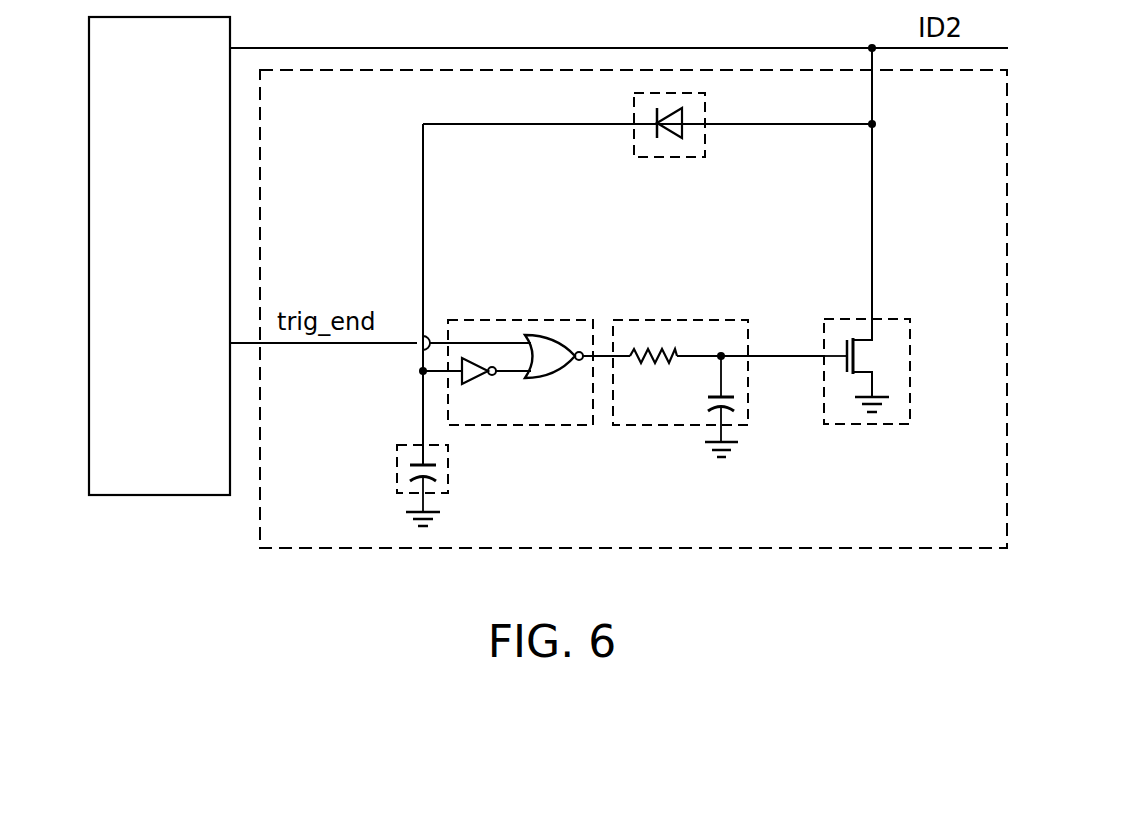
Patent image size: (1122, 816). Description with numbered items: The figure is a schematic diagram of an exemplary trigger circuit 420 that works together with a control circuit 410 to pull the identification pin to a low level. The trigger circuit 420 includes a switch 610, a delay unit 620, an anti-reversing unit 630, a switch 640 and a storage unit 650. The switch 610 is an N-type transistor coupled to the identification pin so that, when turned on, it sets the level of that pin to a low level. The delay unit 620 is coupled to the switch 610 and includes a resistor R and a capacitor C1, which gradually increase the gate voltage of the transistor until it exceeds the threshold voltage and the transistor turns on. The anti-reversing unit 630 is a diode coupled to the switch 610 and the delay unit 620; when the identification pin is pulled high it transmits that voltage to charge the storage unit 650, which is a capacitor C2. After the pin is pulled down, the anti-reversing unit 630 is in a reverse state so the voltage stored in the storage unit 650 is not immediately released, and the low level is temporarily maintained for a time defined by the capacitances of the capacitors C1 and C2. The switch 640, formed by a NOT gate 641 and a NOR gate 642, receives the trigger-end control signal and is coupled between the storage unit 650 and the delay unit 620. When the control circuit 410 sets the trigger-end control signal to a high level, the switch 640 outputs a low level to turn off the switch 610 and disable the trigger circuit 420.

The control circuit 410 is at (136, 308).
The trigger circuit 420 is at (1009, 93).
The switch 610 is at (912, 368).
The delay unit 620 is at (703, 352).
The anti-reversing unit 630 is at (670, 158).
The switch 640 is at (520, 337).
The NOT gate 641 is at (487, 386).
The NOR gate 642 is at (548, 382).
The storage unit 650 is at (408, 485).
The resistor R is at (663, 365).
The capacitor C1 is at (736, 402).
The capacitor C2 is at (450, 472).